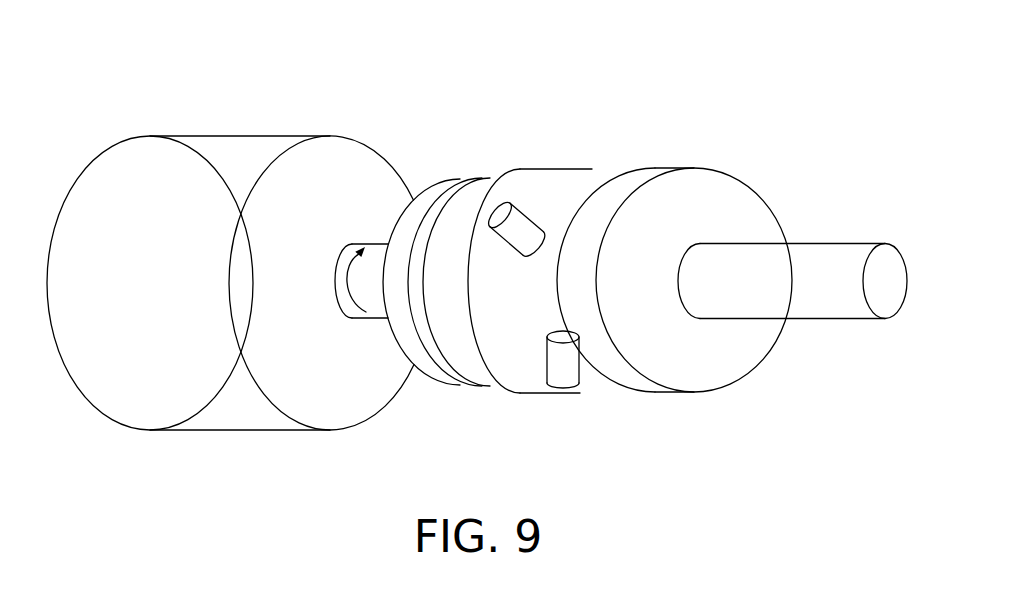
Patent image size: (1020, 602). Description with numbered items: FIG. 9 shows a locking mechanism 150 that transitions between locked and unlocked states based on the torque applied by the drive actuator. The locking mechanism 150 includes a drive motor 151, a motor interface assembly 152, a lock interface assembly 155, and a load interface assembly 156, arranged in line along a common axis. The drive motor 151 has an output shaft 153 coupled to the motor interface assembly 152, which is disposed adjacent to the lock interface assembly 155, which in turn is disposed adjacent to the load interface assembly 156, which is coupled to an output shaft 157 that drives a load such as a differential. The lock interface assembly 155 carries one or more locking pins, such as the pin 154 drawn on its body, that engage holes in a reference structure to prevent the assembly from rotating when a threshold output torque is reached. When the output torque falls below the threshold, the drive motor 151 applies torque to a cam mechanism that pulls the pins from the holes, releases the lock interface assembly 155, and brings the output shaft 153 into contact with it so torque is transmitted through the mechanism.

The locking mechanism 150 is at (103, 51).
The drive motor 151 is at (237, 430).
The motor interface assembly 152 is at (431, 194).
The output shaft 153 is at (382, 319).
The locating pin 154 is at (562, 380).
The lock interface assembly 155 is at (507, 180).
The load interface assembly 156 is at (747, 188).
The output shaft 157 is at (822, 297).